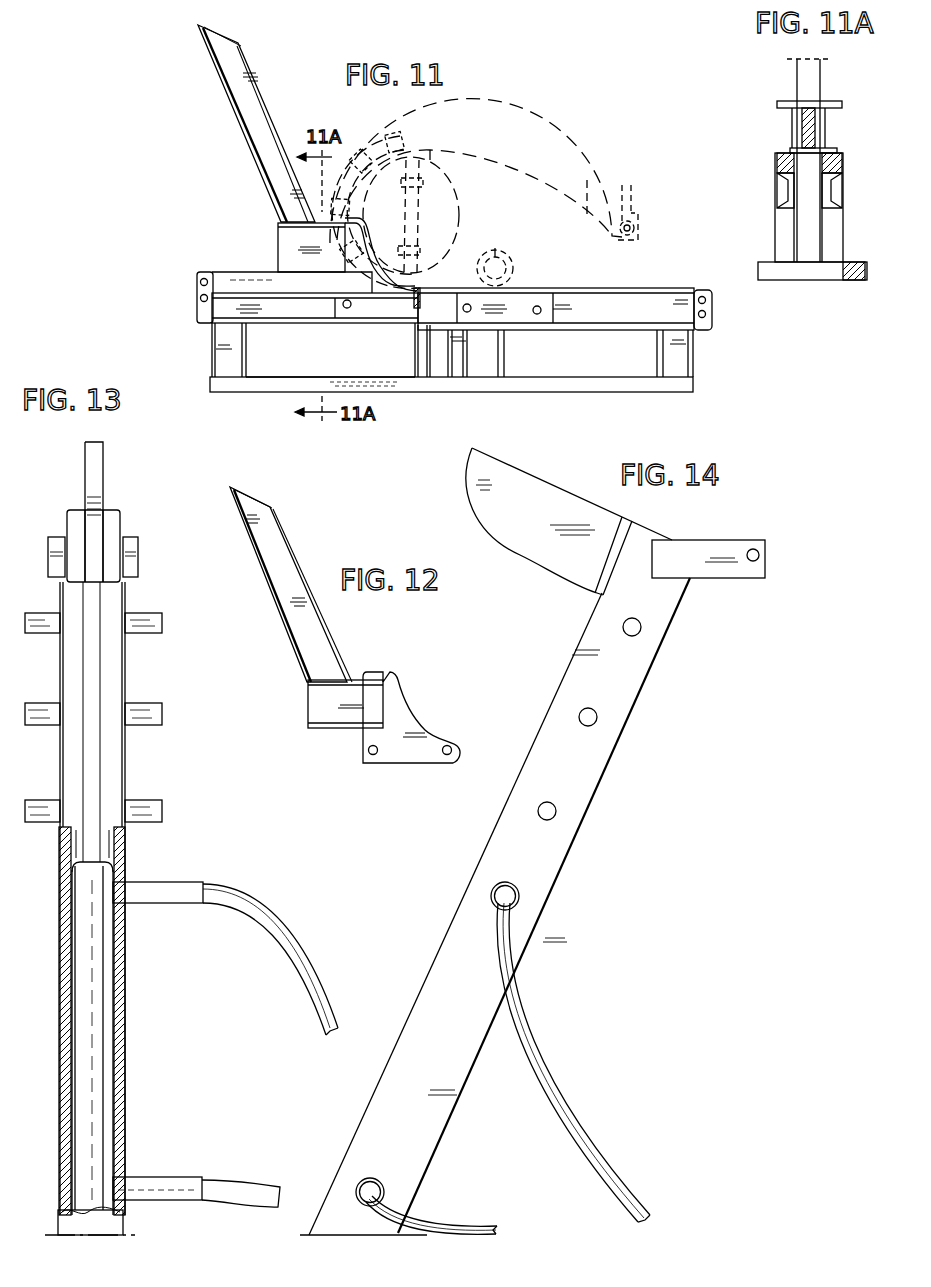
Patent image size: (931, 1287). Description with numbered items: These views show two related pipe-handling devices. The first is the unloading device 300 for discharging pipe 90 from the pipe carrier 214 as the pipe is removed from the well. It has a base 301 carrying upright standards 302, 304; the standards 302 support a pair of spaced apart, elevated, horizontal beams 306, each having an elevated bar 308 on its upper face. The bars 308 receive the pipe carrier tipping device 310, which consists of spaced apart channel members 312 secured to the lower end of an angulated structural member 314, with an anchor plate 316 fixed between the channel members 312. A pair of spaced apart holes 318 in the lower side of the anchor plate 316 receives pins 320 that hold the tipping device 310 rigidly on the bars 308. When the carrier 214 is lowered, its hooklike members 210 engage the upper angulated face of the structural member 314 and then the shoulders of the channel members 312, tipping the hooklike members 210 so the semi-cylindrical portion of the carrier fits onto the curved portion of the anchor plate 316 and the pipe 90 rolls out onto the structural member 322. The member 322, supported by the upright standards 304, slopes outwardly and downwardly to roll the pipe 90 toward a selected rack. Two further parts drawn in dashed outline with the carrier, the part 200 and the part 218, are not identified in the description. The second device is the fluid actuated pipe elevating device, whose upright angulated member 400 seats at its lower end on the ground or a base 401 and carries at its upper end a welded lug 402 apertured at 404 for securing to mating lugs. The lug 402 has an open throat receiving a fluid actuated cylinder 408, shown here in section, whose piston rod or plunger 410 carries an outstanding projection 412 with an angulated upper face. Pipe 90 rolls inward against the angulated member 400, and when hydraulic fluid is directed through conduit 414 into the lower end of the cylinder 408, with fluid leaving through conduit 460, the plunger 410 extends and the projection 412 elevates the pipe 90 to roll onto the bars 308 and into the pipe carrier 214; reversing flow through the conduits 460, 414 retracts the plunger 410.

In FIG. 11, the pipe 90 is at (497, 251).
In FIG. 11, the lever 200 is at (627, 186).
In FIG. 11, the hooklike member 210 is at (533, 136).
In FIG. 11, the pipe carrier 214 is at (392, 143).
In FIG. 11, the drum 218 is at (456, 221).
In FIG. 11, the unloading device 300 is at (200, 302).
In FIG. 11, the base 301 is at (513, 385).
In FIG. 11A, the base 301 is at (765, 272).
In FIG. 11, the upright standards 302 is at (237, 357).
In FIG. 11A, the upright standards 302 is at (780, 233).
In FIG. 11, the upright standards 304 is at (665, 363).
In FIG. 11, the horizontal beams 306 is at (243, 290).
In FIG. 11A, the horizontal beams 306 is at (787, 196).
In FIG. 11, the elevated bar 308 is at (262, 276).
In FIG. 11A, the elevated bar 308 is at (775, 165).
In FIG. 11, the pipe carrier tipping device 310 is at (263, 75).
In FIG. 12, the pipe carrier tipping device 310 is at (294, 539).
In FIG. 11, the channel members 312 is at (278, 224).
In FIG. 11A, the channel members 312 is at (777, 104).
In FIG. 12, the channel members 312 is at (326, 727).
In FIG. 11, the angulated structural member 314 is at (232, 100).
In FIG. 11A, the angulated structural member 314 is at (797, 70).
In FIG. 12, the angulated structural member 314 is at (286, 630).
In FIG. 11, the anchor plate 316 is at (353, 266).
In FIG. 12, the anchor plate 316 is at (402, 720).
In FIG. 12, the holes 318 is at (447, 755).
In FIG. 11, the pins 320 is at (414, 306).
In FIG. 11, the structural member 322 is at (605, 298).
In FIG. 13, the upright angulated member 400 is at (131, 690).
In FIG. 14, the upright angulated member 400 is at (612, 765).
In FIG. 13, the base 401 is at (262, 1237).
In FIG. 13, the lug 402 is at (137, 572).
In FIG. 14, the lug 402 is at (735, 580).
In FIG. 13, the aperture 404 is at (48, 548).
In FIG. 14, the aperture 404 is at (760, 555).
In FIG. 13, the fluid actuated cylinder 408 is at (100, 1020).
In FIG. 13, the piston rod 410 is at (93, 856).
In FIG. 13, the outstanding projection 412 is at (97, 460).
In FIG. 14, the outstanding projection 412 is at (530, 553).
In FIG. 13, the conduit 414 is at (228, 1183).
In FIG. 14, the conduit 414 is at (445, 1215).
In FIG. 13, the conduit 460 is at (250, 903).
In FIG. 14, the conduit 460 is at (543, 1032).